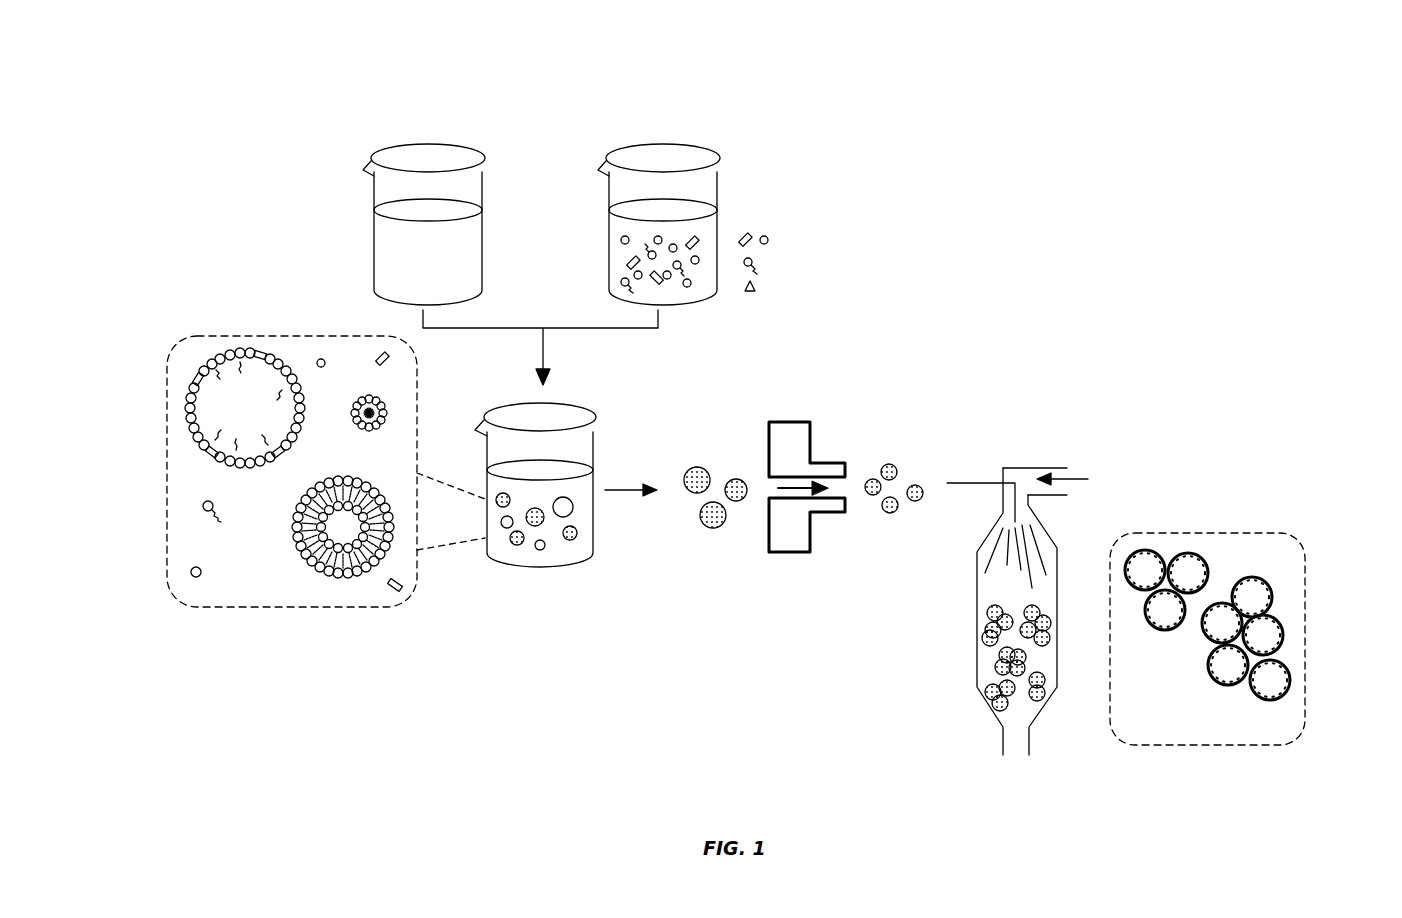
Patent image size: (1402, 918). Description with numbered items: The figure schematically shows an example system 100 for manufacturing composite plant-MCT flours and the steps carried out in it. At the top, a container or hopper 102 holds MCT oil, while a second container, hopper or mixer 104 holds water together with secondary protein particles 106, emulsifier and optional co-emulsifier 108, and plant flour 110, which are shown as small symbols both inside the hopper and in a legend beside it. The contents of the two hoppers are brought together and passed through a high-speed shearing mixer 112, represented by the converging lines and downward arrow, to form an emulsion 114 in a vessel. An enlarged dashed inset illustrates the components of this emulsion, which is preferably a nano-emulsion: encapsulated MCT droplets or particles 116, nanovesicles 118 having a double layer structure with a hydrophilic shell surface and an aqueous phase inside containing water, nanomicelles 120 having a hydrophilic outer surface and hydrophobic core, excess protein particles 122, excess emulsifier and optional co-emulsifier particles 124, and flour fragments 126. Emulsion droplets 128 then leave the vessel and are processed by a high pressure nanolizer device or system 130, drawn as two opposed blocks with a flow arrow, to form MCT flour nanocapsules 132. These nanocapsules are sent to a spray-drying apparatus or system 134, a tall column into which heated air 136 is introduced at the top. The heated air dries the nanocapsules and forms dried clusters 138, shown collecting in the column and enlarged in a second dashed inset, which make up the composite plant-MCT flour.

The system 100 is at (261, 131).
The container or hopper 102 is at (385, 247).
The container, hopper or mixer 104 is at (707, 227).
The secondary protein particles 106 is at (776, 241).
The emulsifier 108 is at (770, 265).
The plant flour 110 is at (765, 289).
The high-speed shearing mixer 112 is at (545, 350).
The emulsion 114 is at (587, 437).
The encapsulated MCT droplets or particles 116 is at (215, 410).
The nanovesicles 118 is at (353, 574).
The nanomicelles 120 is at (366, 400).
The excess protein particles 122 is at (402, 591).
The excess emulsifier particles 124 is at (203, 507).
The flour fragments 126 is at (196, 578).
The emulsion droplets 128 is at (712, 537).
The high pressure nanolizer device or system 130 is at (797, 435).
The MCT flour nanocapsules 132 is at (895, 457).
The spray-drying apparatus or system 134 is at (987, 590).
The heated air 136 is at (1070, 478).
The dried clusters 138 is at (988, 705).